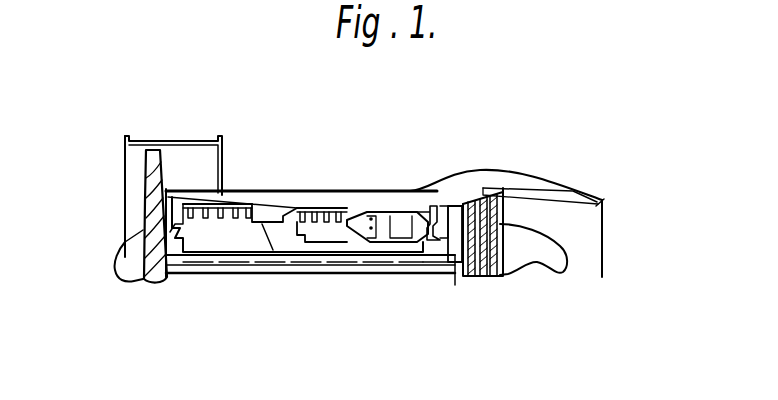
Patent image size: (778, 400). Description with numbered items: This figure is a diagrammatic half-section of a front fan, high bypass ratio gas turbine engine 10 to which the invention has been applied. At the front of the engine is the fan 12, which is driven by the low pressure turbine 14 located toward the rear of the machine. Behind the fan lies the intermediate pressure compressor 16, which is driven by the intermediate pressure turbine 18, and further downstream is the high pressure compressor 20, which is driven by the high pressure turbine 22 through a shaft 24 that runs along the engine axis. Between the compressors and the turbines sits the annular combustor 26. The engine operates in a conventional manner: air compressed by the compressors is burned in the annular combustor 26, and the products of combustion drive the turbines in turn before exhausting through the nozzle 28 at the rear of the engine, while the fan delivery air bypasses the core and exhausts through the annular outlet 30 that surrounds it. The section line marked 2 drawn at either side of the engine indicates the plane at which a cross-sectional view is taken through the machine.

The gas turbine engine 10 is at (95, 136).
The fan 12 is at (143, 162).
The low pressure turbine 14 is at (500, 195).
The intermediate pressure compressor 16 is at (228, 240).
The intermediate pressure turbine 18 is at (457, 245).
The high pressure compressor 20 is at (318, 208).
The high pressure turbine 22 is at (433, 208).
The shaft 24 is at (405, 247).
The annular combustor 26 is at (385, 210).
The nozzle 28 is at (603, 201).
The annular outlet 30 is at (222, 157).
The section line 2- 2 is at (69, 263).